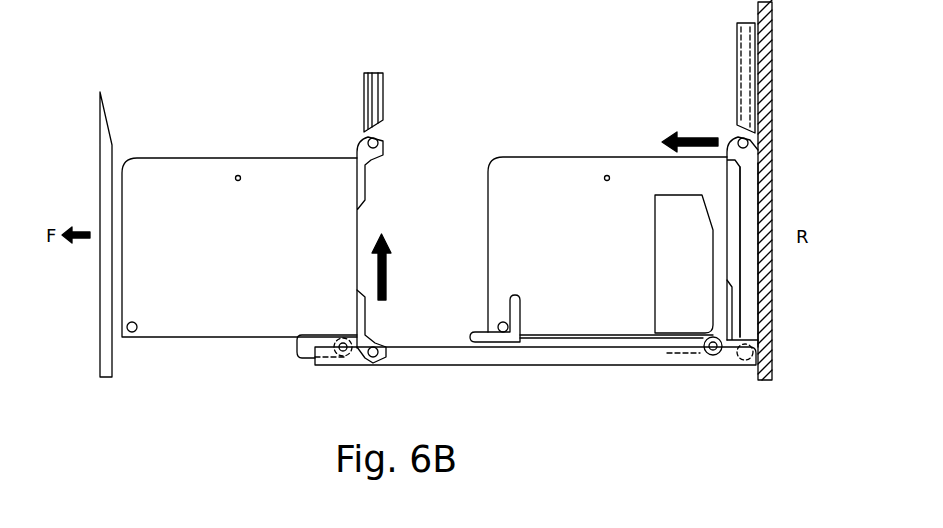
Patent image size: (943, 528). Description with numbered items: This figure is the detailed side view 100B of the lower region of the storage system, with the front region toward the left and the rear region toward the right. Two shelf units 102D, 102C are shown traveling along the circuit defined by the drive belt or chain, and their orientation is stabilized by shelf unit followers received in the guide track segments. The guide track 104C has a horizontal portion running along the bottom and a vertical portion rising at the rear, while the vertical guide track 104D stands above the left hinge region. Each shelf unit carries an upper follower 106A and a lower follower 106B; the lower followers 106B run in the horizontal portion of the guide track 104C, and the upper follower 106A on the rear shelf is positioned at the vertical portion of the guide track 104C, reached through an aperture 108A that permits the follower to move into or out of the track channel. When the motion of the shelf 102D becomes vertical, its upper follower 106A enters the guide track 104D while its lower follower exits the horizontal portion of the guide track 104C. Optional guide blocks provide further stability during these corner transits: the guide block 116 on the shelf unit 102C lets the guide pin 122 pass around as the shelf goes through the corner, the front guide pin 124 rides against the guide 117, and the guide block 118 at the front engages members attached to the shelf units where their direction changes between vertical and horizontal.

The lower region side view 100B is at (252, 382).
The shelf unit 102C is at (633, 252).
The shelf unit 102D is at (276, 253).
The guide track segment 104C is at (527, 362).
The guide track segment 104D is at (378, 97).
The upper follower 106A is at (378, 147).
The lower follower 106B is at (378, 347).
The aperture 108A is at (742, 107).
The guide block 116 is at (668, 223).
The guide 117 is at (515, 297).
The guide block 118 is at (107, 350).
The guide pin 122 is at (712, 348).
The front guide pin 124 is at (137, 325).